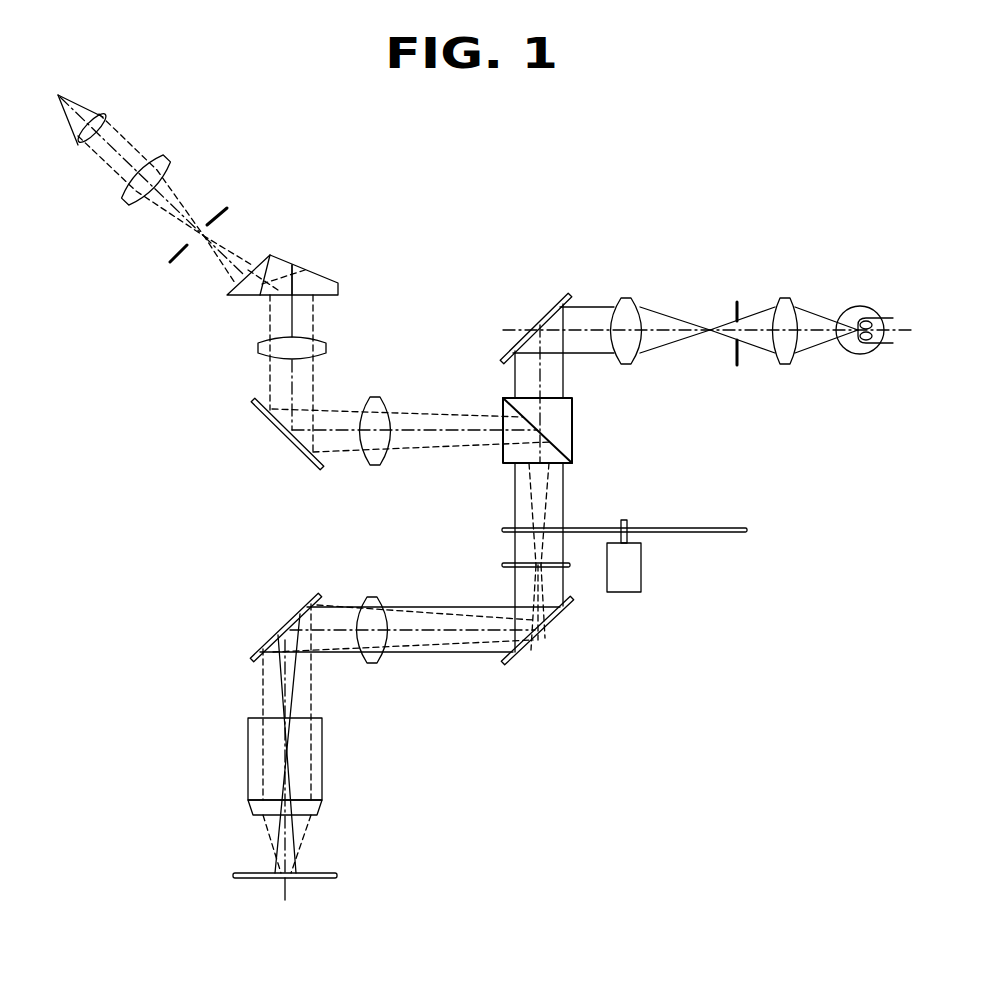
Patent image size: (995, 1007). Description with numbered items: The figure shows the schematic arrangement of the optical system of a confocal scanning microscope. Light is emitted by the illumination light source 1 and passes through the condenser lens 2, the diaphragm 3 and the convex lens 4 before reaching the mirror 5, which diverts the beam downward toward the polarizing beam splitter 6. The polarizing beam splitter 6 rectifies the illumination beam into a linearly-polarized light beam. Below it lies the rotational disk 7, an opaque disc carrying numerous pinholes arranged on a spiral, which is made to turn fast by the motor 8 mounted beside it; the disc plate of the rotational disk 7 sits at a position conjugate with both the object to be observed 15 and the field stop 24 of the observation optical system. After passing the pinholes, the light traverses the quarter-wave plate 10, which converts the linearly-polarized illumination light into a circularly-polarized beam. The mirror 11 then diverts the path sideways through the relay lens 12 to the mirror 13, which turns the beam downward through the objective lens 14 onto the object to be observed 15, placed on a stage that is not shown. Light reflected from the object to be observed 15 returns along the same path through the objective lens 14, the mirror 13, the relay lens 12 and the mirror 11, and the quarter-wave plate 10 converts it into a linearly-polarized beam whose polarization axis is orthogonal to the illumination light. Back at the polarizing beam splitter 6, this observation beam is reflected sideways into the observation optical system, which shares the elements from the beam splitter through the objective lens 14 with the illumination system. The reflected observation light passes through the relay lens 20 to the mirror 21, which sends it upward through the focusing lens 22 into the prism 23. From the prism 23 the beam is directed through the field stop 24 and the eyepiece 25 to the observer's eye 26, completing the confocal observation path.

The illumination light source 1 is at (855, 306).
The condenser lens 2 is at (788, 298).
The diaphragm 3 is at (738, 300).
The convex lens 4 is at (628, 298).
The mirror 5 is at (540, 322).
The polarizing beam splitter 6 is at (572, 423).
The rotational disk 7 is at (713, 525).
The motor 8 is at (628, 562).
The quarter-wave plate 10 is at (503, 563).
The mirror 11 is at (535, 640).
The relay lens 12 is at (372, 662).
The mirror 13 is at (280, 630).
The objective lens 14 is at (258, 750).
The object to be observed 15 is at (250, 872).
The relay lens 20 is at (369, 465).
The mirror 21 is at (291, 436).
The focusing lens 22 is at (326, 348).
The prism 23 is at (318, 272).
The field stop 24 is at (188, 250).
The eyepiece 25 is at (124, 205).
The observer's eye 26 is at (93, 115).